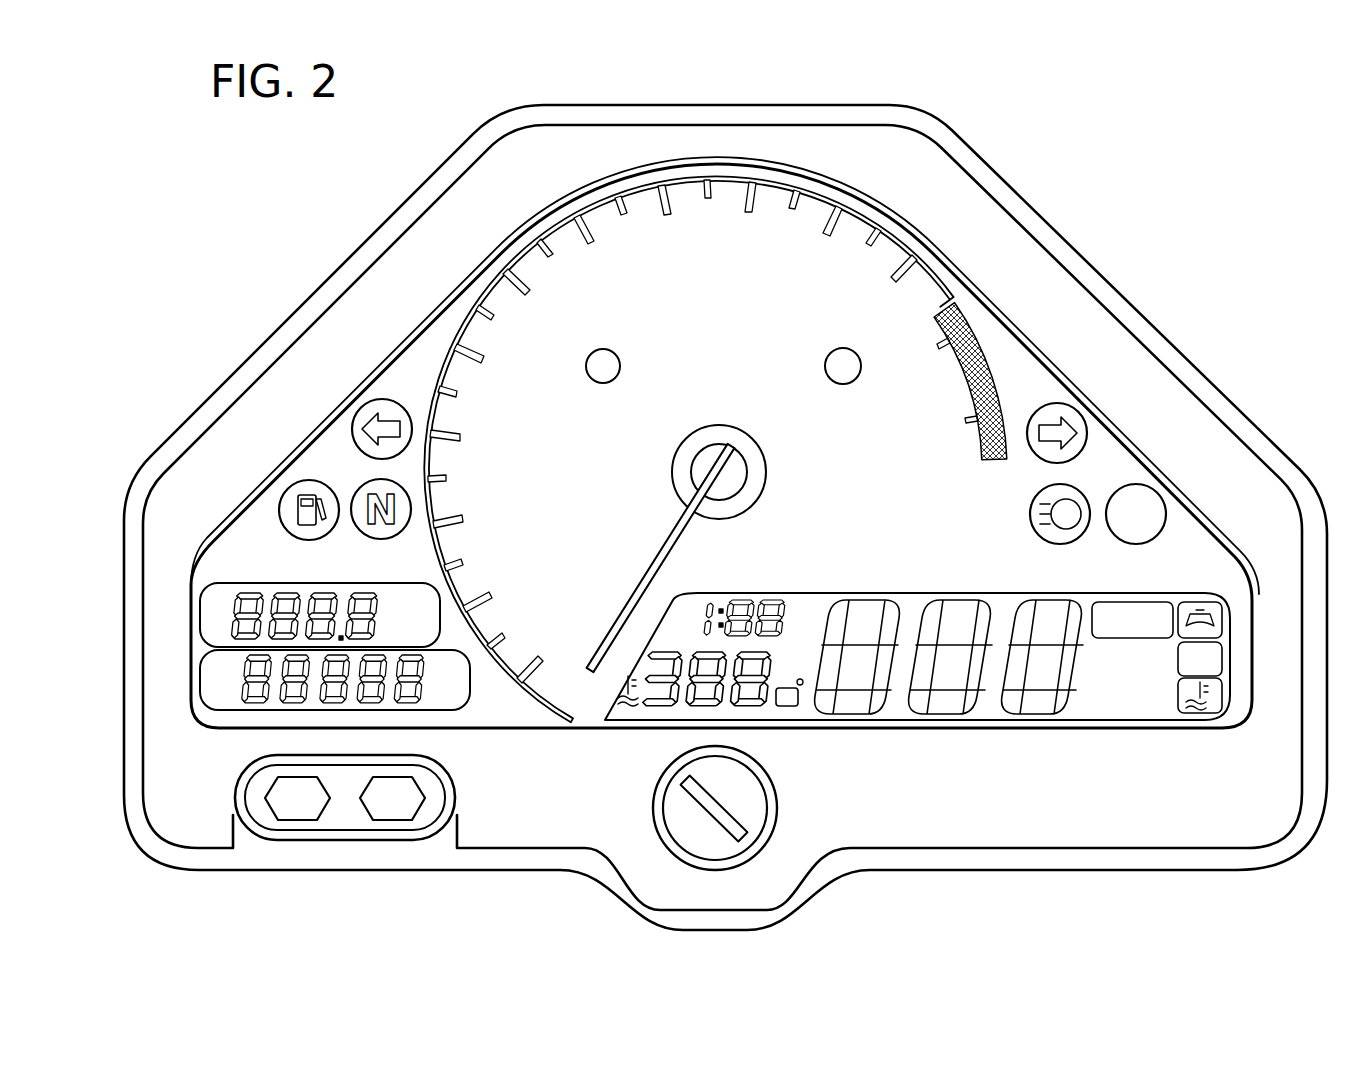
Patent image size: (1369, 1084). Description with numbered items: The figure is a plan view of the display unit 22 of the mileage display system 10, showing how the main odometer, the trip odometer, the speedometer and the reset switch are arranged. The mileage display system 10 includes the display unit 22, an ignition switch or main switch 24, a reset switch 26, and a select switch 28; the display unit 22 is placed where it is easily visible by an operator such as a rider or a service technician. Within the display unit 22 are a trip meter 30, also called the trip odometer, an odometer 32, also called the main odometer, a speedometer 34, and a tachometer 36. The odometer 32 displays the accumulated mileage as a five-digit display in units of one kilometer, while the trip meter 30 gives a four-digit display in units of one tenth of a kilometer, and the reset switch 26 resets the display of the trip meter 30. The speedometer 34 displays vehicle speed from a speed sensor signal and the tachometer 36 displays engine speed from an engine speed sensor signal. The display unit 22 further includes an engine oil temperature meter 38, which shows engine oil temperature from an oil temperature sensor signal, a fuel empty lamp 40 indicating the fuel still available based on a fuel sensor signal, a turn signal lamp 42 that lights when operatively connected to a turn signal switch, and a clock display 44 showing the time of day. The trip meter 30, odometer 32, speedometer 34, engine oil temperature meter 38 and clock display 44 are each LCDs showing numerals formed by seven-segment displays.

The mileage display system 10 is at (1093, 122).
The display unit 22 is at (957, 269).
The ignition switch (main switch) 24 is at (775, 810).
The reset switch 26 is at (392, 820).
The select switch 28 is at (292, 820).
The trip meter 30 is at (202, 616).
The odometer 32 is at (202, 678).
The speedometer 34 is at (925, 721).
The tachometer 36 is at (848, 204).
The engine oil temperature meter 38 is at (757, 708).
The fuel empty lamp 40 is at (310, 480).
The turn signal lamp 42 is at (382, 398).
The clock display 44 is at (790, 621).